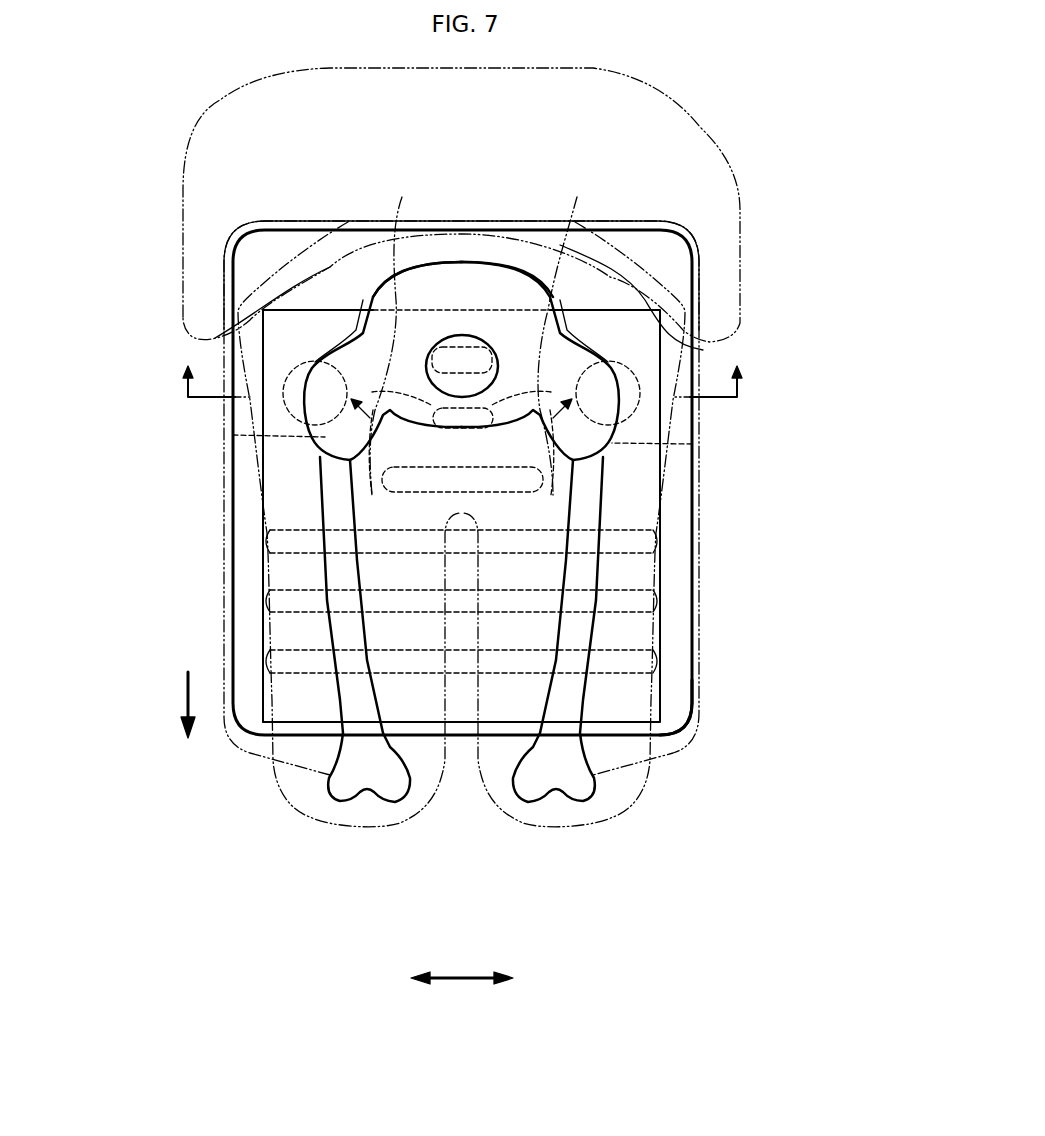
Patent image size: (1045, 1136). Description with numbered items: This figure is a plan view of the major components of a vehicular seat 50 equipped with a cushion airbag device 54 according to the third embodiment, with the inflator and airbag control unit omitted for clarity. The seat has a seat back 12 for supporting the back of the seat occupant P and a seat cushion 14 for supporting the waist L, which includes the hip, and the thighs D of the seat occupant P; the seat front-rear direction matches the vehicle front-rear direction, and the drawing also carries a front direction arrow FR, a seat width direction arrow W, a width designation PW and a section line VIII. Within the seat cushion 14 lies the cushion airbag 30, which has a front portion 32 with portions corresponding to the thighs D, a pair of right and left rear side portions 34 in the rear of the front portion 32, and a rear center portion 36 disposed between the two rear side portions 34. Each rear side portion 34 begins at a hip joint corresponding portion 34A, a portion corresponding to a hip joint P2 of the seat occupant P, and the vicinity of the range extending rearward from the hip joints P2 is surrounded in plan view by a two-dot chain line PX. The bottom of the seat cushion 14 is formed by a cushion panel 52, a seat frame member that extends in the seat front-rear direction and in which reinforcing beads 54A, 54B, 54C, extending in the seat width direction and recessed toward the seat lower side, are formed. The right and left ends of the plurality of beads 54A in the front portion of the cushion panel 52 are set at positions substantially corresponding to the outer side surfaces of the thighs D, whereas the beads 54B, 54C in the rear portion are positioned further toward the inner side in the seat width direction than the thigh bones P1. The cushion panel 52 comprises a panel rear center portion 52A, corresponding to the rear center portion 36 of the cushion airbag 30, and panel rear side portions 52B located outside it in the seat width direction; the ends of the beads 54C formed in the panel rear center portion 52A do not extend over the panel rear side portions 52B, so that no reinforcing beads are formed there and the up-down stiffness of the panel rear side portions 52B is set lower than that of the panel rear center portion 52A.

The seat back 12 is at (740, 223).
The seat cushion 14 is at (705, 583).
The cushion airbag 30 is at (665, 556).
The front portion 32 is at (300, 633).
The rear side portions 34 is at (461, 629).
The hip joint corresponding portions 34A is at (250, 434).
The rear center portion 36 is at (500, 428).
The vehicular seat 50 is at (748, 788).
The cushion panel 52 is at (695, 678).
The panel rear center portion 52A is at (510, 345).
The panel rear side portions 52B is at (312, 364).
The cushion airbag device 54 is at (680, 510).
The beads 54A is at (528, 540).
The bead 54B is at (480, 478).
The beads 54C is at (457, 338).
The seat occupant P is at (346, 256).
The two-dot chain line PX is at (479, 332).
The pelvis width PW is at (478, 280).
The thigh bones P1 is at (332, 488).
The hip joints P2 is at (320, 400).
The waist L is at (703, 350).
The thighs D is at (283, 580).
The vehicle front direction FR is at (184, 722).
The seat width direction W is at (462, 975).
The section line VIII- VIII is at (186, 394).